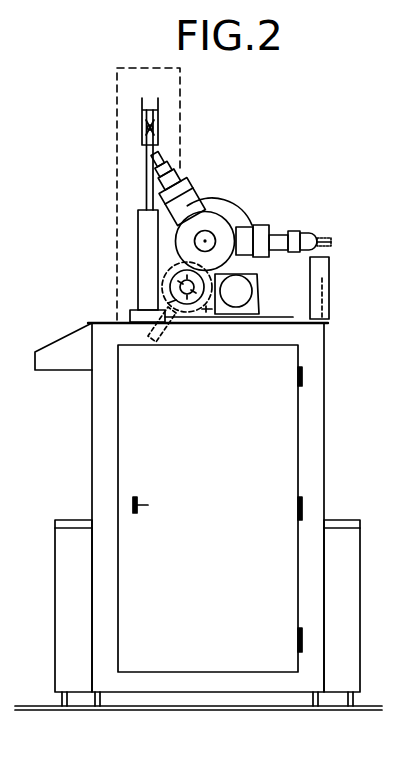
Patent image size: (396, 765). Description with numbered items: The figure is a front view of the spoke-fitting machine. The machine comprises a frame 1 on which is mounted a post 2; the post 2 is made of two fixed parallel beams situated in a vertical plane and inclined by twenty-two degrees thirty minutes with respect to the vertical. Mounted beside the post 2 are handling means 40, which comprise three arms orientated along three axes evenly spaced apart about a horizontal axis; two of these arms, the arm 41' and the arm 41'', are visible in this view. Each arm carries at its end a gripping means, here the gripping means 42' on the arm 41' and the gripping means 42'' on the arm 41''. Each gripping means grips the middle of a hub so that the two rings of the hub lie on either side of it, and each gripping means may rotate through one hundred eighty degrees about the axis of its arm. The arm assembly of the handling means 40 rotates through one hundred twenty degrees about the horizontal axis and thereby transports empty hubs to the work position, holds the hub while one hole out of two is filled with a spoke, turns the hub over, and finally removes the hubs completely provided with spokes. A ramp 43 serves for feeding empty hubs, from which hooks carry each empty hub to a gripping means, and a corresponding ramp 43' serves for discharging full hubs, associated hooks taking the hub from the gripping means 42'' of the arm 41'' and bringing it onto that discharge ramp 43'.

The frame 1 is at (88, 418).
The post 2 is at (115, 192).
The handling means 40 is at (220, 186).
The arm 41' is at (202, 182).
The arm 41'' is at (264, 215).
The gripping means 42' is at (183, 143).
The gripping means 42'' is at (329, 225).
The ramp 43 is at (119, 195).
The ramp 43' is at (344, 288).